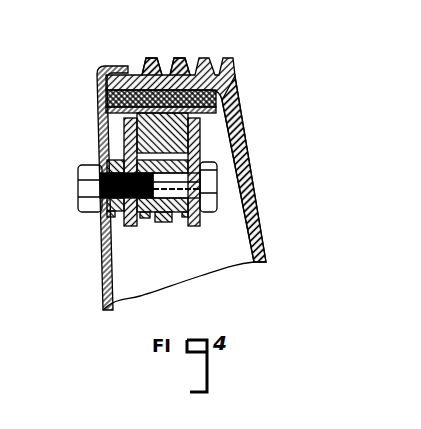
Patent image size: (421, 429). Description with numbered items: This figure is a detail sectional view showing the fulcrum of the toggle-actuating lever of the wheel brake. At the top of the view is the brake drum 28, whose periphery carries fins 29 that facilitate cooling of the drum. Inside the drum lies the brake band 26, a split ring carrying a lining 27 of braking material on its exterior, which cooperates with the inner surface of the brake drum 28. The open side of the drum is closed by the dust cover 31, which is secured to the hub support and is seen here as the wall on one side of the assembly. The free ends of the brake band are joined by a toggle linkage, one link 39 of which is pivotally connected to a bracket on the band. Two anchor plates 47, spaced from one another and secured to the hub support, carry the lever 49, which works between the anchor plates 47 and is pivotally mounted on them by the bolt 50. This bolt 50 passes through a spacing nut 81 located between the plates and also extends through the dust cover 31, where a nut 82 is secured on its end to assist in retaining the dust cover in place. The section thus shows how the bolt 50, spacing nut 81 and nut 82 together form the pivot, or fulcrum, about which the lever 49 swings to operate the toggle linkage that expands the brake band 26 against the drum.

The brake band 26 is at (232, 99).
The lining 27 is at (213, 60).
The brake drum 28 is at (160, 60).
The fins 29 is at (186, 61).
The dust cover 31 is at (102, 267).
The link 39 is at (201, 118).
The anchor plates 47 is at (128, 143).
The lever 49 is at (199, 160).
The bolt 50 is at (174, 212).
The spacing nut 81 is at (114, 212).
The nut 82 is at (92, 190).